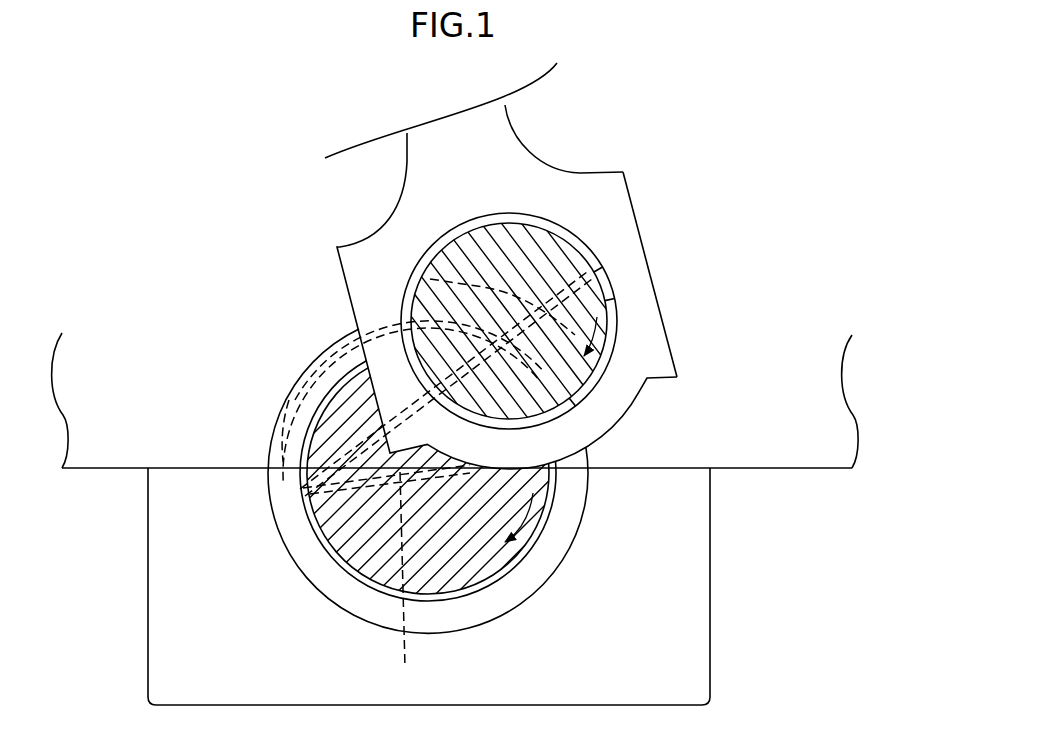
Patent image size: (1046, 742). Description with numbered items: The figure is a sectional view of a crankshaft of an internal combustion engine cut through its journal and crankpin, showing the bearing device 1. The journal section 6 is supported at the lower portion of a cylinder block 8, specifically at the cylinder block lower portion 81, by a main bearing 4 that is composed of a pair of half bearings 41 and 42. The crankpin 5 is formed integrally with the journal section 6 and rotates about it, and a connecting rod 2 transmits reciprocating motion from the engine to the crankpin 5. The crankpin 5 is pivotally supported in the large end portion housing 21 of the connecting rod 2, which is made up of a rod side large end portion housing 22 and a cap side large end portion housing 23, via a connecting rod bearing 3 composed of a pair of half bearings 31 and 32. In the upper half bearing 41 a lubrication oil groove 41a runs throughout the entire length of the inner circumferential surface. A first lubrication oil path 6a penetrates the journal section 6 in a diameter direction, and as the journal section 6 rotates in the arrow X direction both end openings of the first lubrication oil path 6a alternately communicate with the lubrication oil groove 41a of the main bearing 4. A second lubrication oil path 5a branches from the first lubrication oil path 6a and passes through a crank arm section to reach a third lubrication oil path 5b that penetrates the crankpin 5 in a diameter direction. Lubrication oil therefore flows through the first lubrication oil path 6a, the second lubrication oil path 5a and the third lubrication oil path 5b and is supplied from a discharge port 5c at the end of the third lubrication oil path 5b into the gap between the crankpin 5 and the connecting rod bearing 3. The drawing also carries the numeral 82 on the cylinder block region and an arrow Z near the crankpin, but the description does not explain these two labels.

The bearing device 1 is at (150, 186).
The connecting rod 2 is at (407, 167).
The large end portion housing 21 is at (563, 289).
The rod side large end portion housing 22 is at (643, 240).
The cap side large end portion housing 23 is at (663, 323).
The connecting rod bearing 3 is at (574, 286).
The half bearing 31 is at (465, 223).
The half bearing 32 is at (575, 387).
The main bearing 4 is at (343, 481).
The half bearing 41 is at (278, 412).
The lubrication oil groove 41a is at (290, 457).
The half bearing 42 is at (285, 525).
The crankpin 5 is at (530, 247).
The second lubrication oil path 5a is at (360, 425).
The third lubrication oil path 5b is at (430, 279).
The discharge port 5c is at (603, 270).
The journal section 6 is at (428, 496).
The first lubrication oil path 6a is at (403, 582).
The cylinder block 8 is at (455, 519).
The cylinder block lower portion 81 is at (760, 470).
The base side wall 82 is at (712, 637).
The arrow X direction X is at (523, 520).
The rotation direction of heating roller Z is at (590, 383).